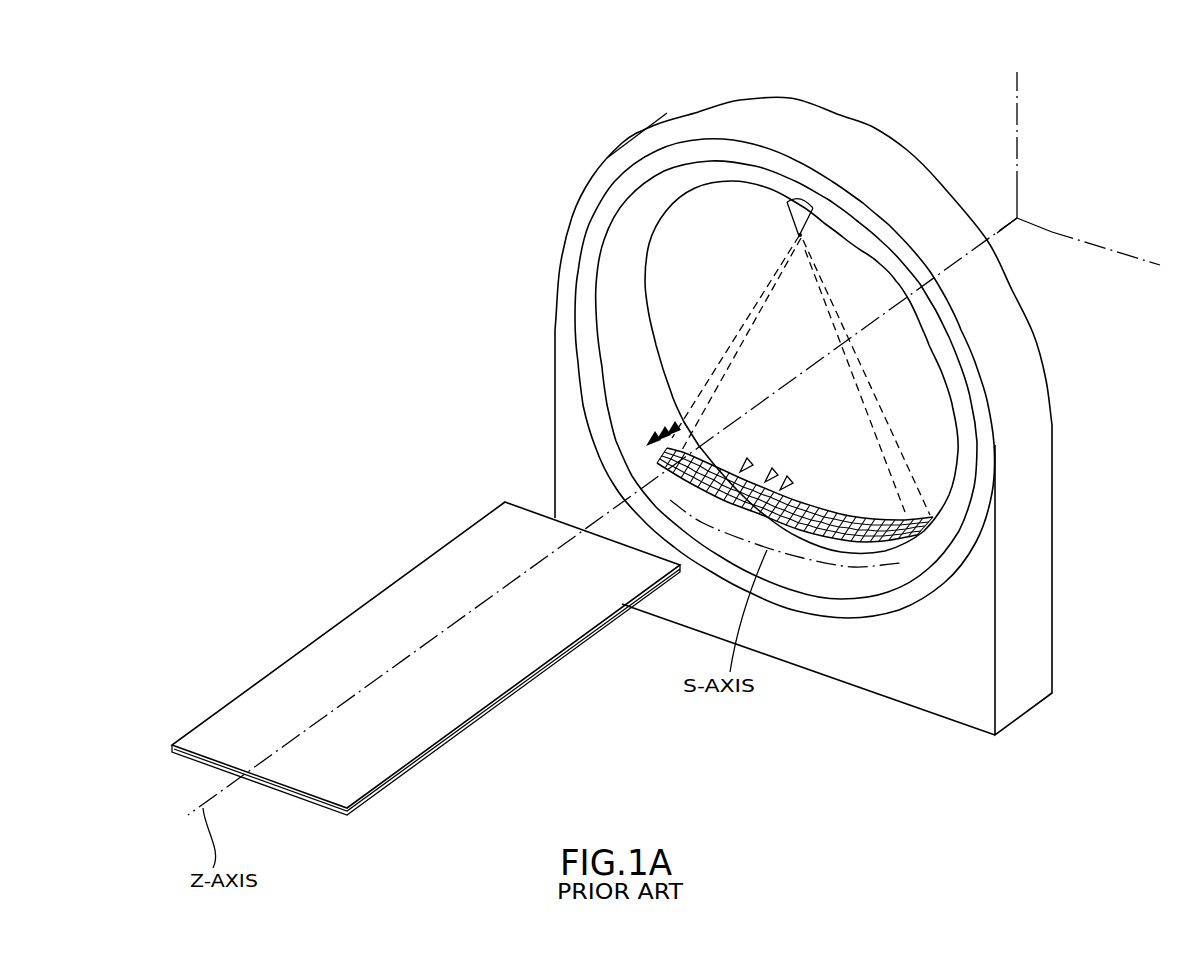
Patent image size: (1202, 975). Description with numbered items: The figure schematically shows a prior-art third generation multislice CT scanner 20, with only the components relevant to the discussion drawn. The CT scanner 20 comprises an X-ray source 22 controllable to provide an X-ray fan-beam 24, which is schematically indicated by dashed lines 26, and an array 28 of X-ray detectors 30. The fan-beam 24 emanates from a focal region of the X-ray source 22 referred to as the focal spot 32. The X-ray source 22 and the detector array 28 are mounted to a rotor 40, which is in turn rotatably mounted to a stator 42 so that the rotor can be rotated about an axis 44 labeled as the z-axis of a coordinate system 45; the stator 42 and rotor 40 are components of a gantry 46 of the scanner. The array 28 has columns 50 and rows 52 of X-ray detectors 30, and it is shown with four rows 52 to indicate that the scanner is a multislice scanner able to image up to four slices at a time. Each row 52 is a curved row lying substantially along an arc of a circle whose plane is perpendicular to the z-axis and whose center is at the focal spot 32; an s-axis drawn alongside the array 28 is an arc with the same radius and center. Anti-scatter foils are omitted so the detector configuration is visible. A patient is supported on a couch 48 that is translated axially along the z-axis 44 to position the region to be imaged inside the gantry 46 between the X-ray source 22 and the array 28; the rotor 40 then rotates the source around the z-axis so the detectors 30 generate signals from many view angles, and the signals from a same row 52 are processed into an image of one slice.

The CT scanner 20 is at (468, 220).
The X-ray source 22 is at (793, 200).
The X-ray fan-beam 24 is at (778, 314).
The dashed lines 26 is at (880, 450).
The array 28 is at (938, 463).
The X-ray detectors 30 is at (805, 516).
The focal spot 32 is at (797, 235).
The rotor 40 is at (590, 292).
The stator 42 is at (727, 124).
The axis 44 is at (227, 787).
The coordinate system 45 is at (1092, 158).
The gantry 46 is at (637, 135).
The couch 48 is at (432, 723).
The columns 50 is at (790, 479).
The rows 52 is at (672, 426).